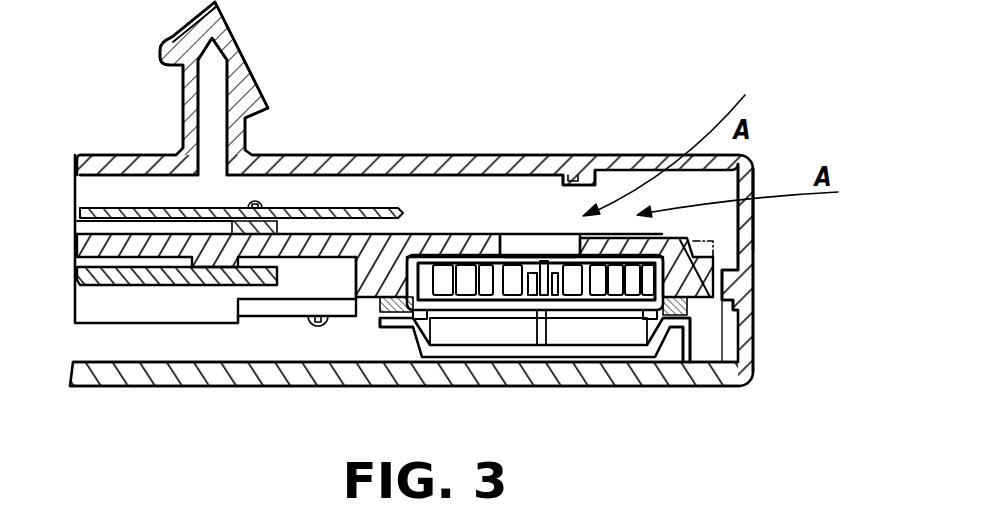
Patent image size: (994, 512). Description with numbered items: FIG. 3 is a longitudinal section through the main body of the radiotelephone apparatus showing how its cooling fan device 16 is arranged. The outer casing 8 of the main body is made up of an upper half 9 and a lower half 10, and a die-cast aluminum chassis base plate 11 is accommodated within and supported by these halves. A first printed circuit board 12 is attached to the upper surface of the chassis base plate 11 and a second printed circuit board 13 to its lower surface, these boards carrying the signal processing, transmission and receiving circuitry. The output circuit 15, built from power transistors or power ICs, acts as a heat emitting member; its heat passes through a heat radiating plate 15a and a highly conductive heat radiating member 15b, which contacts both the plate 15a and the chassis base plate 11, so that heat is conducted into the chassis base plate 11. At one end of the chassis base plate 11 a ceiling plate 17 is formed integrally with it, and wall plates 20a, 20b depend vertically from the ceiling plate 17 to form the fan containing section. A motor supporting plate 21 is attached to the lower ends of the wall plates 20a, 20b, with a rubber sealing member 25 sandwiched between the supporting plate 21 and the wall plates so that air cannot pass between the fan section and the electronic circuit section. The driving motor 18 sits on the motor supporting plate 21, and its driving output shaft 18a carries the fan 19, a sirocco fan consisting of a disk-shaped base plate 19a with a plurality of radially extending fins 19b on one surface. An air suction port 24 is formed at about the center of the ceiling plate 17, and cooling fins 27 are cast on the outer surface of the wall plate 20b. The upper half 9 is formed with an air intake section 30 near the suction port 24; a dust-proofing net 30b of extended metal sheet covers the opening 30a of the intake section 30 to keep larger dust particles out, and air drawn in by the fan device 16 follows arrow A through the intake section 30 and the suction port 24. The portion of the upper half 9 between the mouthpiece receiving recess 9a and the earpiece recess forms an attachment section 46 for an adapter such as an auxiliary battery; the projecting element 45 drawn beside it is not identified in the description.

The outer casing 8 is at (770, 351).
The upper half 9 is at (567, 157).
The mouthpiece receiving recess 9a is at (339, 150).
The lower half 10 is at (757, 379).
The chassis base plate 11 is at (107, 170).
The first printed circuit board 12 is at (84, 209).
The second printed circuit board 13 is at (102, 278).
The output circuit 15 is at (177, 325).
The heat radiating plate 15a is at (307, 317).
The heat radiating member 15b is at (277, 298).
The cooling fan device 16 is at (702, 329).
The ceiling plate 17 is at (445, 240).
The driving motor 18 is at (613, 346).
The driving output shaft 18a is at (542, 320).
The fan 19 is at (660, 242).
The disk-shaped base plate 19a is at (486, 310).
The radially extending fins 19b is at (468, 268).
The wall plate 20a is at (400, 312).
The wall plate 20b is at (745, 323).
The motor supporting plate 21 is at (667, 355).
The air suction port 24 is at (505, 235).
The sealing member 25 is at (393, 328).
The cooling fins 27 is at (716, 254).
The air intake section 30 is at (648, 148).
The opening 30a is at (745, 285).
The dust-proofing net 30b is at (755, 215).
The hook 45 is at (266, 110).
The attachment section 46 is at (128, 232).